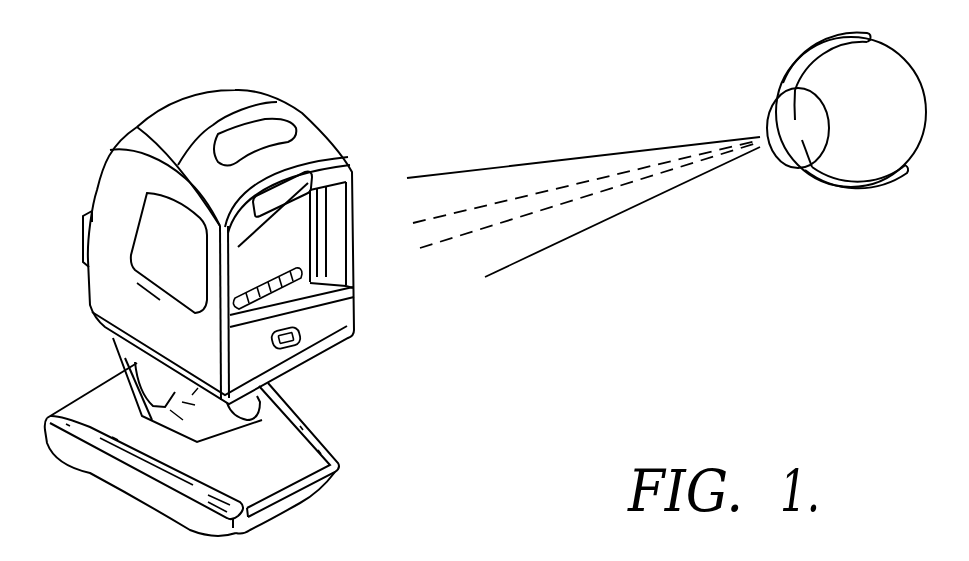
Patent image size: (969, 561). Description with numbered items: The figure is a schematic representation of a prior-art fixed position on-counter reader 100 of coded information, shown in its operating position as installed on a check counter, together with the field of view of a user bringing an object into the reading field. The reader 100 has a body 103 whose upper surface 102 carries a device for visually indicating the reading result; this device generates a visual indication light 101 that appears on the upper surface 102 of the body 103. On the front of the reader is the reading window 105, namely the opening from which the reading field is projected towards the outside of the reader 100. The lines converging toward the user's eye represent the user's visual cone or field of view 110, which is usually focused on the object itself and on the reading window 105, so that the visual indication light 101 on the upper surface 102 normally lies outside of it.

The on-counter reader 100 is at (141, 70).
The visual indication light 101 is at (258, 130).
The upper surface 102 is at (322, 142).
The body 103 is at (107, 300).
The reading window 105 is at (287, 255).
The field of view / beam 110 is at (520, 245).